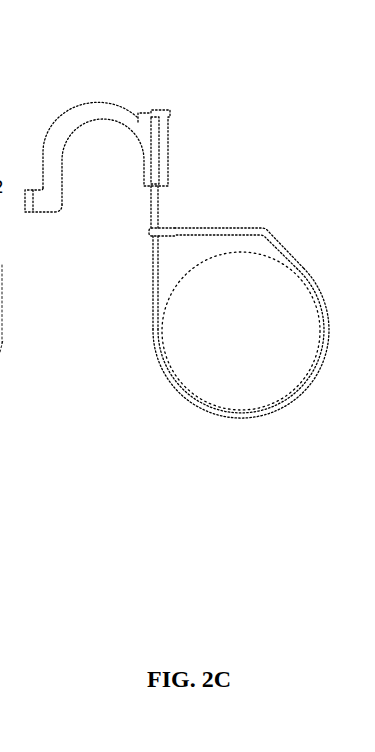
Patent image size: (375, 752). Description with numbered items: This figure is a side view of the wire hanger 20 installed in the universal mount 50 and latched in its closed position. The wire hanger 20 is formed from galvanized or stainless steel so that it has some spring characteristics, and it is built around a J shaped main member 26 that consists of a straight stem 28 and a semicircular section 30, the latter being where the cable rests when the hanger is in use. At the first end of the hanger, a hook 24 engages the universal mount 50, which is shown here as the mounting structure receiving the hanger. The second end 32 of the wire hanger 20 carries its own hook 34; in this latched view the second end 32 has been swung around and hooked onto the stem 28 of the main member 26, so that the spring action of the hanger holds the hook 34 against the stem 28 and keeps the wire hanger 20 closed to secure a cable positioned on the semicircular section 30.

The wire hanger 20 is at (205, 297).
The hook 24 is at (173, 112).
The J shaped main member 26 is at (152, 283).
The stem 28 is at (150, 213).
The semicircular section 30 is at (193, 408).
The second end 32 is at (223, 230).
The hook 34 is at (165, 224).
The universal mount 50 is at (74, 108).